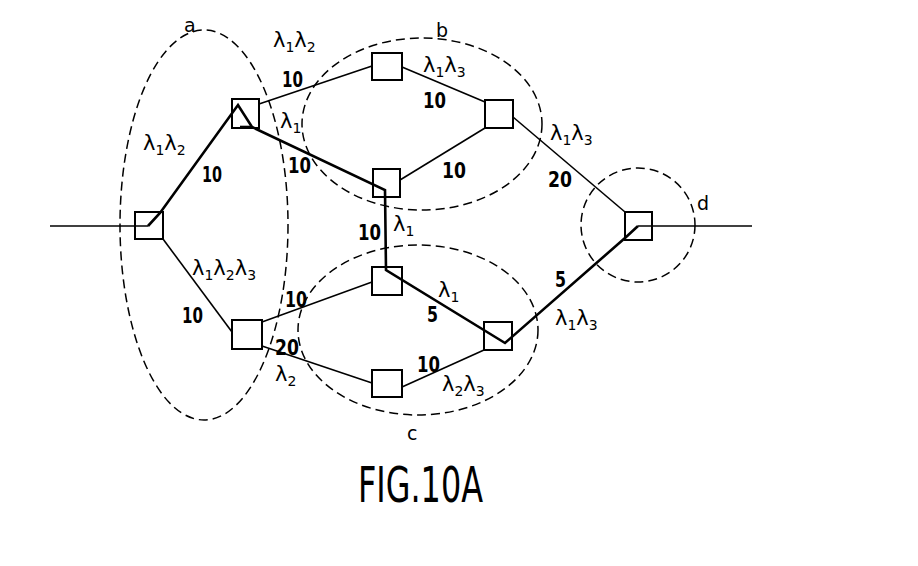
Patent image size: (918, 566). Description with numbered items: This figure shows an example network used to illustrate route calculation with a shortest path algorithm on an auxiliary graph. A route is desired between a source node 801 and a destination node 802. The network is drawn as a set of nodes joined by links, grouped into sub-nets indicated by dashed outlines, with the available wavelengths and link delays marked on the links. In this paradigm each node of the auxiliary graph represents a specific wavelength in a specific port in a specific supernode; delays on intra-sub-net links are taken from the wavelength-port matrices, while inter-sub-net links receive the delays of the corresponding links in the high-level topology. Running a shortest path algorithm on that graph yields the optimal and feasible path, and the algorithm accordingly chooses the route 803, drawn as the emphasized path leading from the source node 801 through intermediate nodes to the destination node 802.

The source node 801 is at (140, 250).
The destination node 802 is at (709, 162).
The route 803 is at (713, 236).